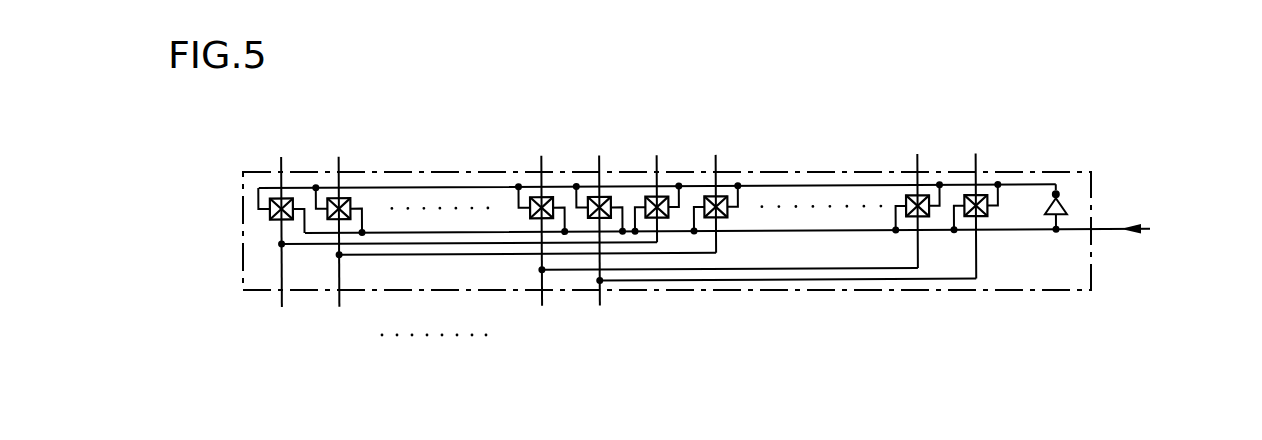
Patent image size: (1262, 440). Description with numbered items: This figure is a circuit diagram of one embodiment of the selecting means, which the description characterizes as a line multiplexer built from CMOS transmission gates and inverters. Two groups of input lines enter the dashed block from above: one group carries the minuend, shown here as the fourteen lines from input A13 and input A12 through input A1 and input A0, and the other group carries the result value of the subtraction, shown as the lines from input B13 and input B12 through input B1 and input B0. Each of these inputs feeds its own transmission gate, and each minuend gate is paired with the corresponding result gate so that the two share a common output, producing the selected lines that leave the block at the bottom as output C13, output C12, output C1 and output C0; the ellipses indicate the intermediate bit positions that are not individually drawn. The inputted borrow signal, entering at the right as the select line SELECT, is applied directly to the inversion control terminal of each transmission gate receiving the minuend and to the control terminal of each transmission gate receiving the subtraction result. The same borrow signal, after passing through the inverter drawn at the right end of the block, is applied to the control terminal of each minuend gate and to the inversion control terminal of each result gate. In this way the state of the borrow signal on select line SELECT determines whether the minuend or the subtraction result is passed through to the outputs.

The A-input bit 13 transmission gate A13 is at (280, 179).
The A-input bit 12 transmission gate A12 is at (350, 179).
The A-input bit 1 transmission gate A1 is at (541, 179).
The A-input bit 0 transmission gate A0 is at (599, 179).
The B-input bit 13 transmission gate B13 is at (653, 178).
The B-input bit 12 transmission gate B12 is at (713, 178).
The B-input bit 1 transmission gate B1 is at (917, 178).
The B-input bit 0 transmission gate B0 is at (976, 178).
The output bit 13 C13 is at (278, 292).
The output bit 12 C12 is at (338, 292).
The output bit 1 C1 is at (541, 291).
The output bit 0 C0 is at (596, 291).
The select signal inverter SELECT is at (1147, 213).